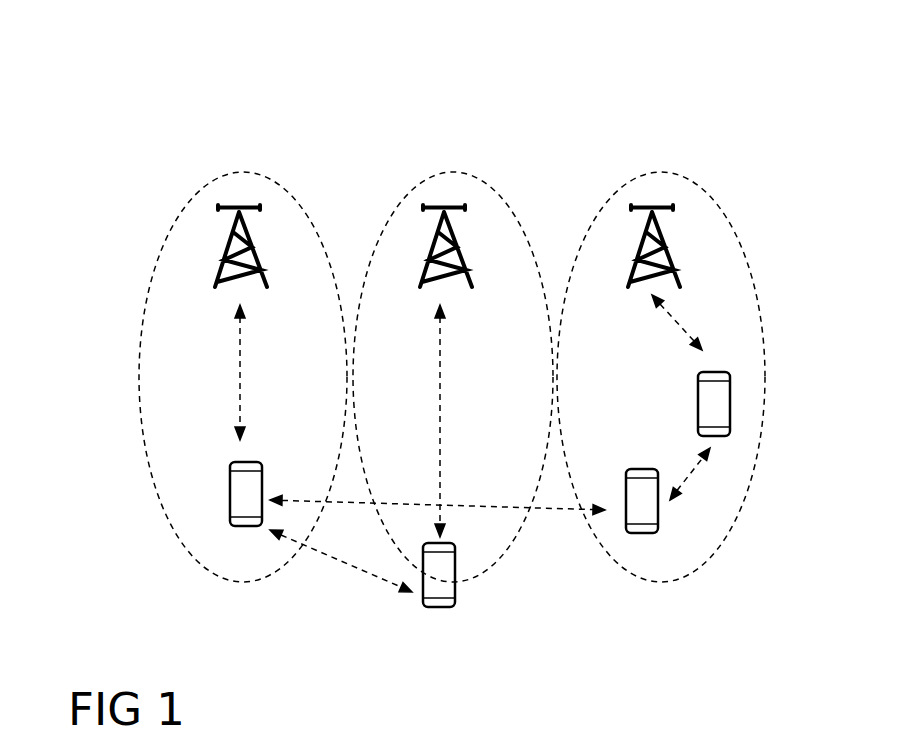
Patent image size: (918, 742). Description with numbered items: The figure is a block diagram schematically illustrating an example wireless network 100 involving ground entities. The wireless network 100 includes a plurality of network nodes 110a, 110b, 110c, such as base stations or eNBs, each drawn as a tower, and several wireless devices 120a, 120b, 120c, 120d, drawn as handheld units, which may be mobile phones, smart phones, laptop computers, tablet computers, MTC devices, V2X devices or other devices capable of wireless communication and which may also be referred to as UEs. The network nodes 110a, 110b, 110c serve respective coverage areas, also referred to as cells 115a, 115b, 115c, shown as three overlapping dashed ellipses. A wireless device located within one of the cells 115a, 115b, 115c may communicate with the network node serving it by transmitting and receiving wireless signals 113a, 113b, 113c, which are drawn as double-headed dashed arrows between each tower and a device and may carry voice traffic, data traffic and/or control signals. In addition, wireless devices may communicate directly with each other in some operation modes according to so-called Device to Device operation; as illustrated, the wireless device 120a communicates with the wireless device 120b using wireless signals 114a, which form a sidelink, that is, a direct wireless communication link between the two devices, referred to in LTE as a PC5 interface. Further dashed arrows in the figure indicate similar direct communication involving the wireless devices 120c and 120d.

The wireless network 100 is at (147, 102).
The network node 110a is at (255, 254).
The network node 110b is at (460, 254).
The network node 110c is at (668, 254).
The wireless signals 113a is at (216, 372).
The wireless signals 113b is at (414, 421).
The wireless signals 113c is at (694, 322).
The wireless signals 114a is at (341, 561).
The cell 115a is at (300, 197).
The cell 115b is at (545, 175).
The cell 115c is at (752, 175).
The wireless device 120a is at (230, 485).
The wireless device 120b is at (455, 594).
The wireless device 120c is at (698, 395).
The wireless device 120d is at (626, 493).